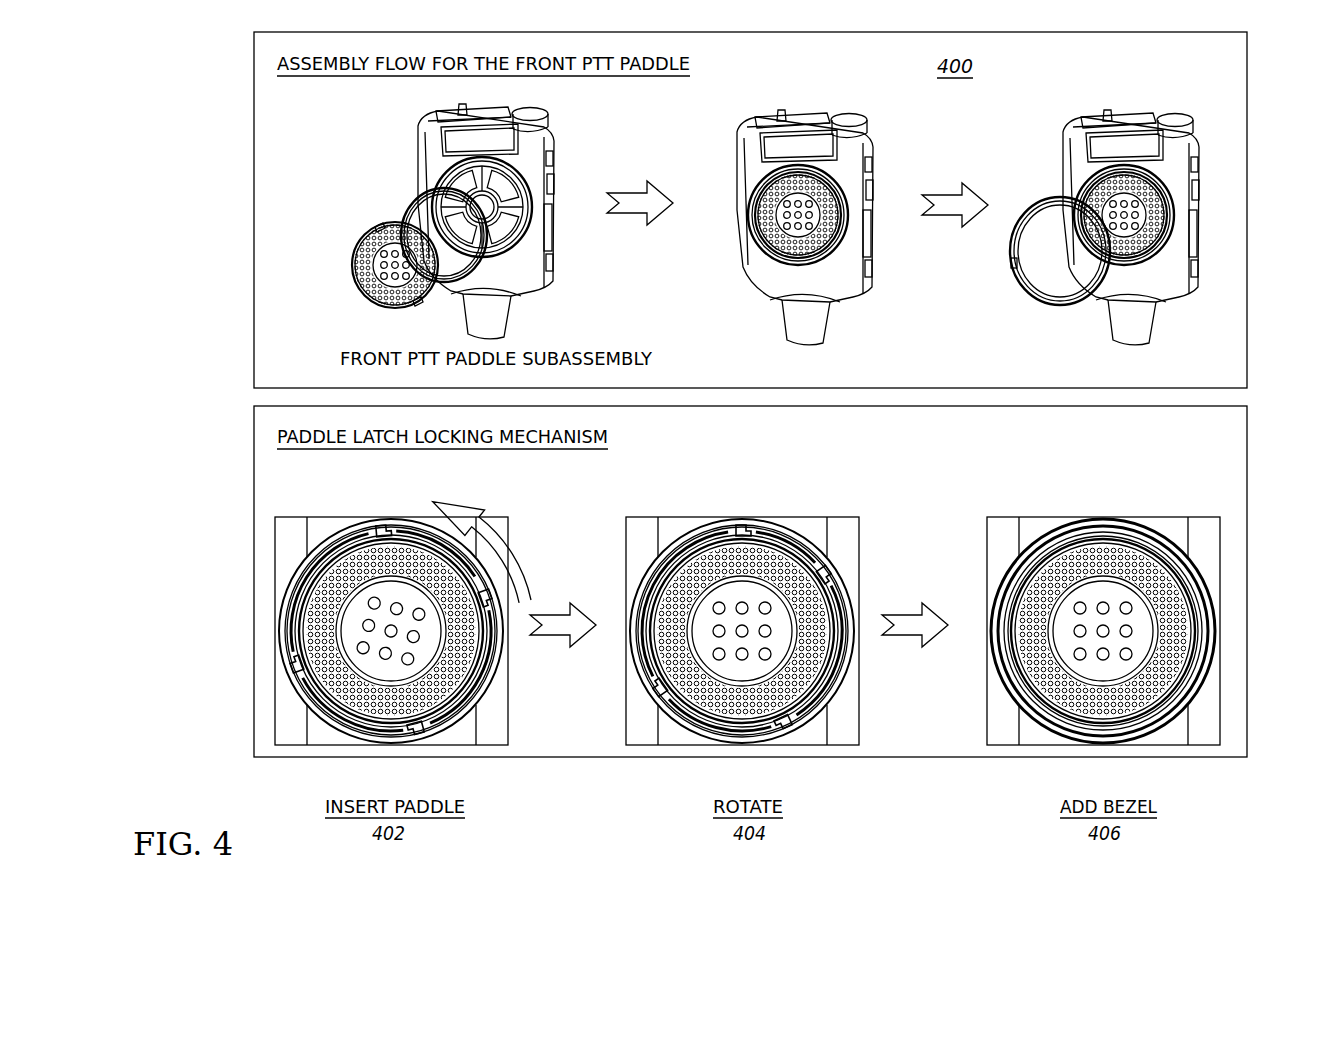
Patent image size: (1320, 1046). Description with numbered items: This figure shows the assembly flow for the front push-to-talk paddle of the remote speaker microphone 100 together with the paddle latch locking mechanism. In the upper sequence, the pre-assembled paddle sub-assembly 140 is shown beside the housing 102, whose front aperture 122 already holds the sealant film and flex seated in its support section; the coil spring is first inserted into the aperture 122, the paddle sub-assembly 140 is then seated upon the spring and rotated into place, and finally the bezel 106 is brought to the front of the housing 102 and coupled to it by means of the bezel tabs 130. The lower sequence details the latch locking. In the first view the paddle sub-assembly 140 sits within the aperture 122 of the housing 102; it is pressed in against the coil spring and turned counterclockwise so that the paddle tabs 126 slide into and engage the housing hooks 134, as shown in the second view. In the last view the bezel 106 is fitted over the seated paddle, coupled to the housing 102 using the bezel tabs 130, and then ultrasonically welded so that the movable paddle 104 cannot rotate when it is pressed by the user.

The portable radio 100 is at (549, 141).
The housing 102 is at (496, 524).
The movable paddle 104 is at (414, 660).
The bezel 106 is at (411, 214).
The aperture 122 is at (358, 518).
The paddle tabs 126 is at (367, 516).
The bezel tabs 130 is at (1012, 270).
The housing hooks 134 is at (305, 555).
The paddle sub-assembly 140 is at (353, 263).